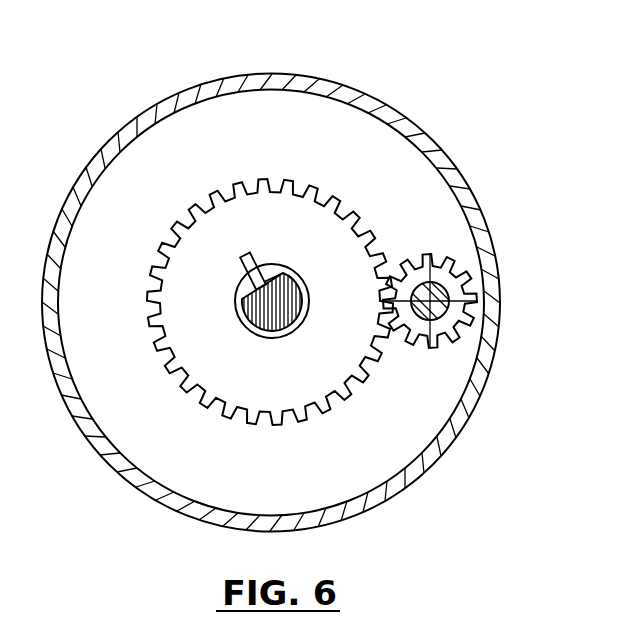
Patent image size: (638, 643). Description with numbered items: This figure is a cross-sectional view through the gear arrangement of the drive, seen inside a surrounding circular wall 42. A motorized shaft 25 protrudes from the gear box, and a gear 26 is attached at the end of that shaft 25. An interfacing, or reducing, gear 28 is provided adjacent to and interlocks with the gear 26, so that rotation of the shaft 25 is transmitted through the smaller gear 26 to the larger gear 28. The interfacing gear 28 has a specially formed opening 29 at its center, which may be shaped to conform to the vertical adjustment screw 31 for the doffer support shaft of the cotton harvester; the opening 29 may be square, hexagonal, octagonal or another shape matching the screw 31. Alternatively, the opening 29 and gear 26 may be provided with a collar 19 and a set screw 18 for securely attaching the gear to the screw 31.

The housing 42 is at (348, 88).
The interfacing (reducing) gear 28 is at (300, 204).
The specially formed opening 29 is at (287, 322).
The collar 19 is at (240, 323).
The set screw 18 is at (243, 265).
The vertical adjustment screw 31 is at (282, 280).
The gear 26 is at (450, 278).
The motorized shaft 25 is at (445, 308).